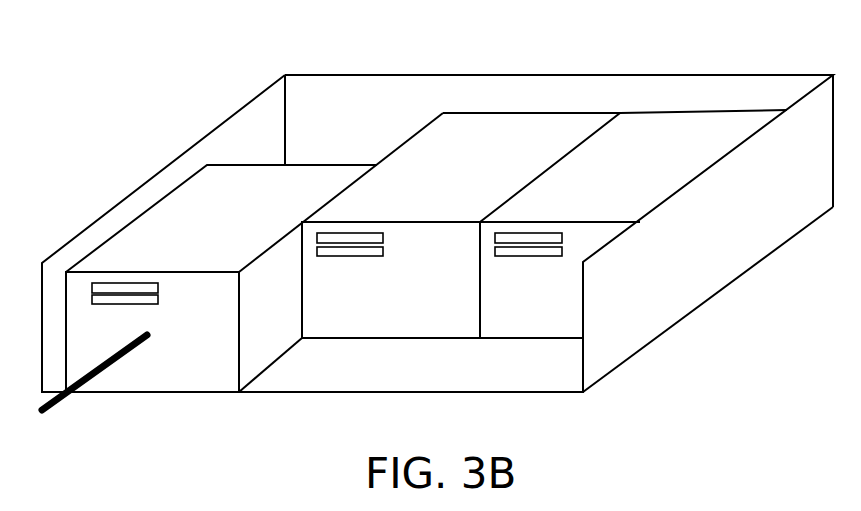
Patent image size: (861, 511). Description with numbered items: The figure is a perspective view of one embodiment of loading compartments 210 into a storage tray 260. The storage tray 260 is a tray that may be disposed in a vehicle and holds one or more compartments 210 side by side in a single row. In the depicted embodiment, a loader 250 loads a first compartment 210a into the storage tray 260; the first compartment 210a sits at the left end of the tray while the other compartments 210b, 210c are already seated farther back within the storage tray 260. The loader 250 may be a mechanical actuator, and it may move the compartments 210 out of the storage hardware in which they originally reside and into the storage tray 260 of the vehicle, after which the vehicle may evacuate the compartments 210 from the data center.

The compartment 210 is at (116, 117).
The storage tray 260 is at (308, 75).
The first compartment 210a is at (257, 230).
The compartment 210b is at (507, 173).
The compartment 210c is at (673, 170).
The loader 250 is at (95, 377).